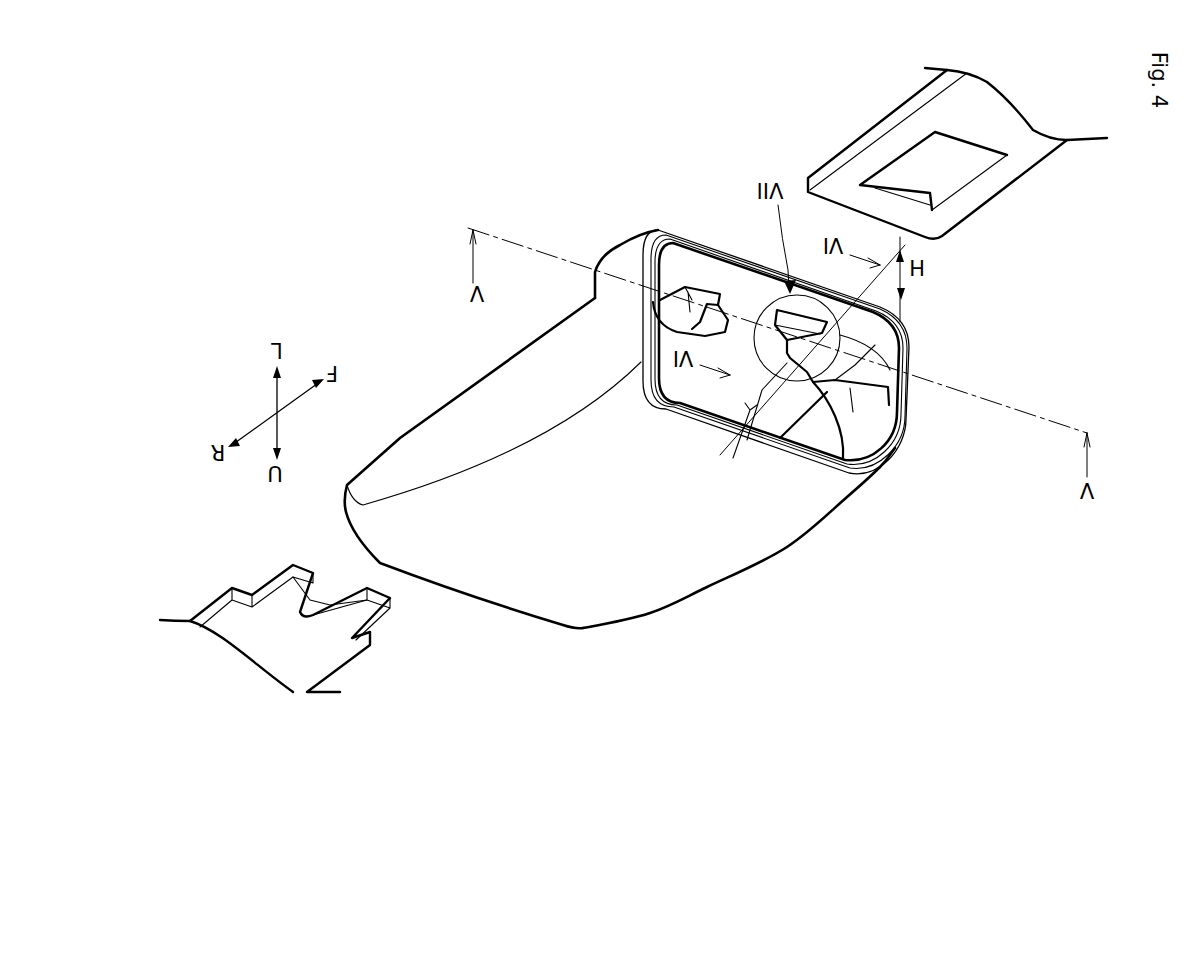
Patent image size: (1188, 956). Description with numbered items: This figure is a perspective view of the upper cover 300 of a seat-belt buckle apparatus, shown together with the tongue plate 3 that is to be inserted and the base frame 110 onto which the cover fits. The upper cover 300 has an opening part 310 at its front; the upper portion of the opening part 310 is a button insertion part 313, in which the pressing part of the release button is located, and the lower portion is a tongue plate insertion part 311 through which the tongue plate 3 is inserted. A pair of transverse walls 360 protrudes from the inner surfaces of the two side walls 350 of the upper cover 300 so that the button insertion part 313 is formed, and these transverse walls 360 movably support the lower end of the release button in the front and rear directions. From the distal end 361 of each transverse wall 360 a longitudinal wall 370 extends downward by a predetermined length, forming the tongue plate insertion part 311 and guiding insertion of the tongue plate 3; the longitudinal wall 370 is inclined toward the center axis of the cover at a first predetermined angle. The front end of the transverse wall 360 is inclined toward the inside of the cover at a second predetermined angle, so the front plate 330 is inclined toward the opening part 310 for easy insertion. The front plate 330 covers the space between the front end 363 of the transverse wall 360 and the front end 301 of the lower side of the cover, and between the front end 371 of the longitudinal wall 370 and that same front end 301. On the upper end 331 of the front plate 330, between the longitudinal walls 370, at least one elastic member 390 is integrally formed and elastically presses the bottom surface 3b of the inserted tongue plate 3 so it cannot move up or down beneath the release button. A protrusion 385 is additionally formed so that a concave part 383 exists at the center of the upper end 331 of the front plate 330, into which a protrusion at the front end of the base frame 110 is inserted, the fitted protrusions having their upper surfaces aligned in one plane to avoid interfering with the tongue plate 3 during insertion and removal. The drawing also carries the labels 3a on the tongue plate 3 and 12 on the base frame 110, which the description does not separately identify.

The tongue plate 3 is at (940, 115).
The mounting hole 3a is at (917, 200).
The bottom surface of the tongue plate 3b is at (827, 163).
The engagement tab 12 is at (280, 580).
The base frame 110 is at (366, 659).
The upper cover 300 is at (628, 620).
The front end of the lower side of the cover 301 is at (717, 277).
The opening part 310 is at (797, 627).
The tongue plate insertion part 311 is at (733, 458).
The button insertion part 313 is at (747, 440).
The front plate 330 is at (737, 266).
The upper end of the front plate 331 is at (660, 275).
The side walls 350 is at (440, 425).
The transverse walls 360 is at (880, 428).
The distal end of the transverse wall 361 is at (797, 440).
The front end of the transverse wall 363 is at (905, 380).
The longitudinal wall 370 is at (880, 352).
The front end of the longitudinal wall 371 is at (880, 333).
The concave part 383 is at (653, 322).
The protrusion 385 is at (650, 338).
The elastic member 390 is at (783, 318).